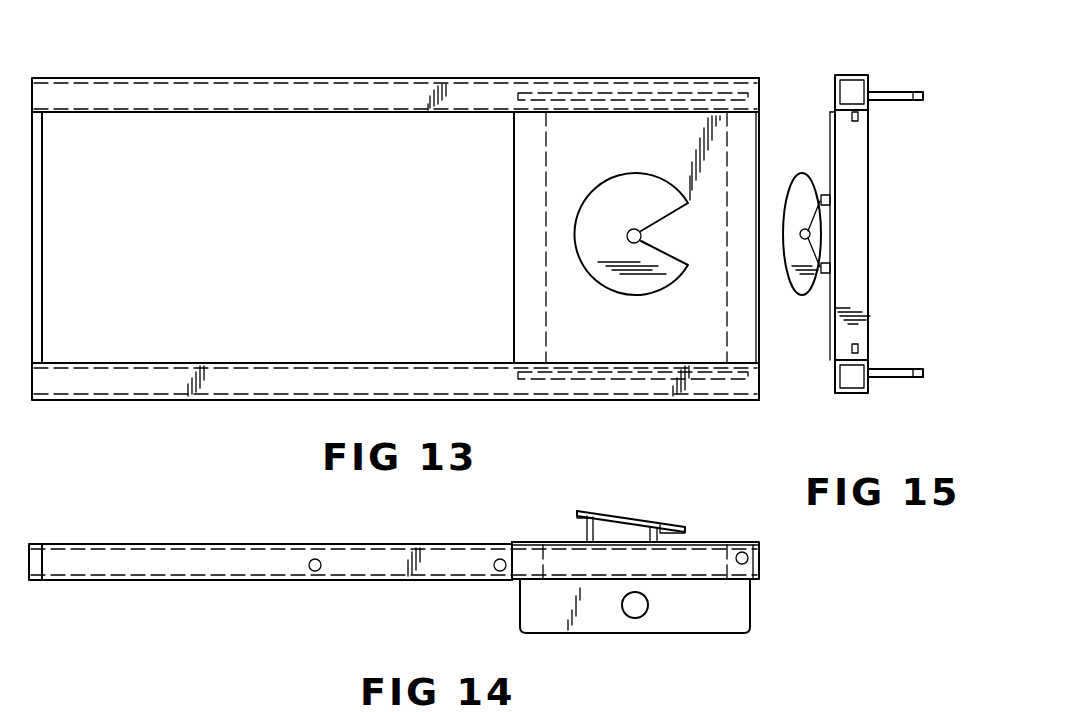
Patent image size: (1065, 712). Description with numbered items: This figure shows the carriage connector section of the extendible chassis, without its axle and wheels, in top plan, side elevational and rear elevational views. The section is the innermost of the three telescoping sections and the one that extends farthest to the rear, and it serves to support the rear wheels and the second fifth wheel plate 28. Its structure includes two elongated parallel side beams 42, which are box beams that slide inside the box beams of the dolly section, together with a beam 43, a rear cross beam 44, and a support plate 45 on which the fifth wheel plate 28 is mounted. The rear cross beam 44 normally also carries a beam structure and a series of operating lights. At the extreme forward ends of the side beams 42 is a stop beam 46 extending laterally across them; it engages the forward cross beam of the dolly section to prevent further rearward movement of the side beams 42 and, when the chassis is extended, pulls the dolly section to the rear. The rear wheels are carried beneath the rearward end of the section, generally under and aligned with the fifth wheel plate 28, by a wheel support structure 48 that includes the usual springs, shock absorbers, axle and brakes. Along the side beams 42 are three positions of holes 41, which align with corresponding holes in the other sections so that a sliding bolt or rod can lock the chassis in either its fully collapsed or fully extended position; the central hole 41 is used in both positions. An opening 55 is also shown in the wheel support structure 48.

In FIG. 13, the second fifth wheel plate 28 is at (608, 281).
In FIG. 15, the second fifth wheel plate 28 is at (805, 284).
In FIG. 14, the second fifth wheel plate 28 is at (612, 512).
In FIG. 13, the holes 41 is at (320, 79).
In FIG. 14, the holes 41 is at (313, 571).
In FIG. 13, the side beams 42 is at (453, 85).
In FIG. 15, the side beams 42 is at (846, 75).
In FIG. 14, the side beams 42 is at (360, 580).
In FIG. 13, the beam 43 is at (514, 290).
In FIG. 14, the beam 43 is at (512, 557).
In FIG. 13, the rear cross beam 44 is at (752, 341).
In FIG. 14, the rear cross beam 44 is at (762, 562).
In FIG. 13, the support plate 45 is at (636, 237).
In FIG. 15, the support plate 45 is at (830, 138).
In FIG. 14, the support plate 45 is at (705, 542).
In FIG. 13, the stop beam 46 is at (42, 298).
In FIG. 15, the stop beam 46 is at (860, 117).
In FIG. 14, the stop beam 46 is at (42, 562).
In FIG. 15, the wheel support structure 48 is at (920, 92).
In FIG. 14, the wheel support structure 48 is at (750, 603).
In FIG. 14, the aperture 55 is at (648, 604).